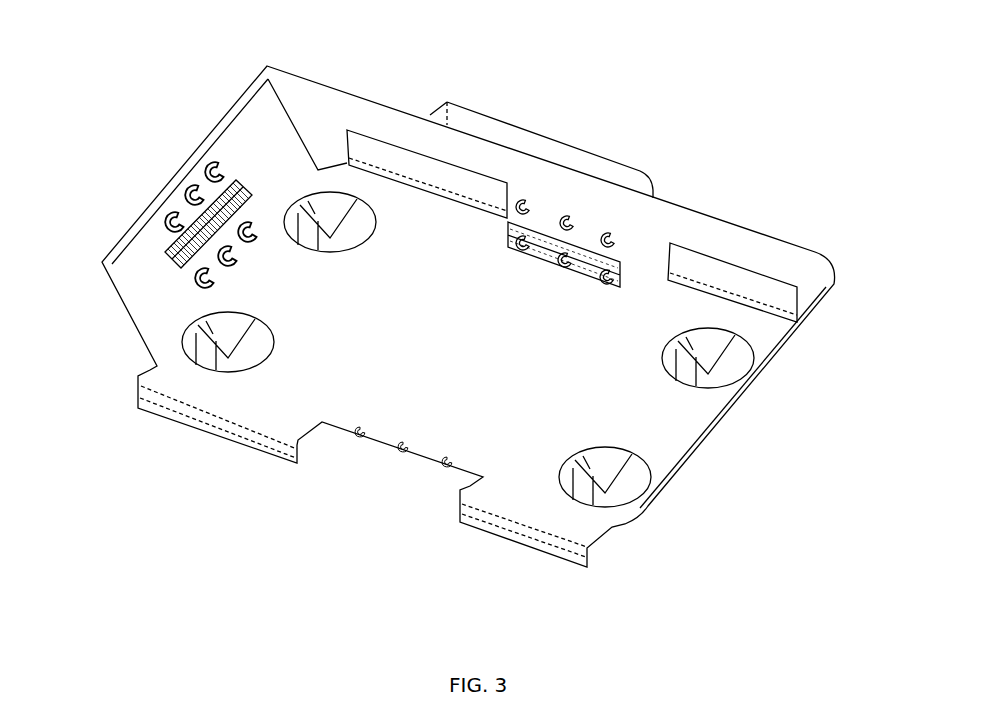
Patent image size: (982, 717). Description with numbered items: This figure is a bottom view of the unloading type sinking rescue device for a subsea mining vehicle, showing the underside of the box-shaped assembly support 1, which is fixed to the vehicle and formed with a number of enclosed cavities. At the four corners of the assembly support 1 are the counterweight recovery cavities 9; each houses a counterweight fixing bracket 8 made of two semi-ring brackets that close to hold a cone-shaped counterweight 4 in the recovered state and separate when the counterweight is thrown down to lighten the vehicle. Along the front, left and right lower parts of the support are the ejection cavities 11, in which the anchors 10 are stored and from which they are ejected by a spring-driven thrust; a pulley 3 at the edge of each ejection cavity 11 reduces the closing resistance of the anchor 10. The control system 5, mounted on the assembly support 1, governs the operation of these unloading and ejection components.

The assembly support 1 is at (715, 238).
The pulley 3 is at (185, 192).
The counterweight 4 is at (747, 380).
The control system 5 is at (602, 178).
The counterweight fixing bracket 8 is at (207, 308).
The counterweight recovery cavity 9 is at (560, 488).
The anchor 10 is at (168, 258).
The ejection cavity 11 is at (572, 220).